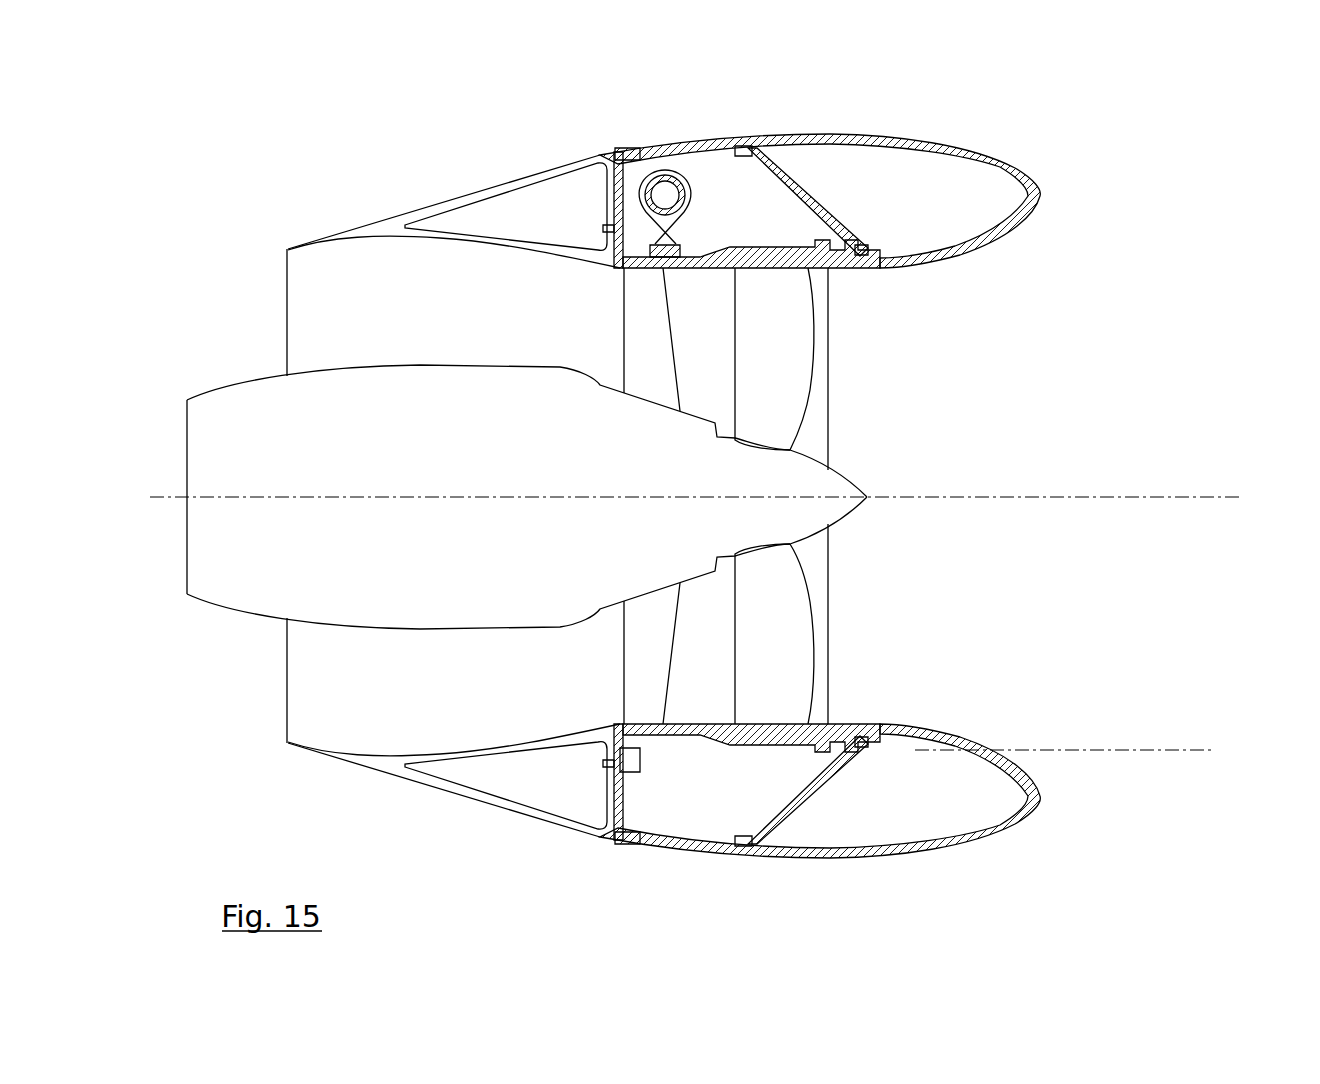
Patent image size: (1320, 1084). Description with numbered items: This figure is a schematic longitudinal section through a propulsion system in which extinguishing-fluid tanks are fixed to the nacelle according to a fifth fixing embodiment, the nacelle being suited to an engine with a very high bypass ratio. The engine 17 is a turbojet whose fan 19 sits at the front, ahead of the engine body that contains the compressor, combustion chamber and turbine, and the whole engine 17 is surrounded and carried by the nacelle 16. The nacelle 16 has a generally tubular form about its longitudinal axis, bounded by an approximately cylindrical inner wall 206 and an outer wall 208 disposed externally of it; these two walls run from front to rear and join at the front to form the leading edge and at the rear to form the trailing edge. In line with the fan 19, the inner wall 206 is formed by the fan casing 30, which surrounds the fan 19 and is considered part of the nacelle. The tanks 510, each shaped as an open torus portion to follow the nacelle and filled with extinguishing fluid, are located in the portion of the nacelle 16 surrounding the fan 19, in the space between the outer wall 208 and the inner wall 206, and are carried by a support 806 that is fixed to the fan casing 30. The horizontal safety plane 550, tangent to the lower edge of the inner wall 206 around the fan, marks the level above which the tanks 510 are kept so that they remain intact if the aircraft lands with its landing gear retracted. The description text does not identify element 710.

The nacelle 16 is at (1038, 172).
The engine 17 is at (815, 558).
The fan 19 is at (767, 373).
The fan casing 30 is at (690, 248).
The inner wall 206 is at (958, 740).
The outer wall 208 is at (953, 848).
The tank 510 is at (646, 160).
The safety plane 550 is at (1137, 750).
The strut 710 is at (853, 222).
The support 806 is at (665, 185).